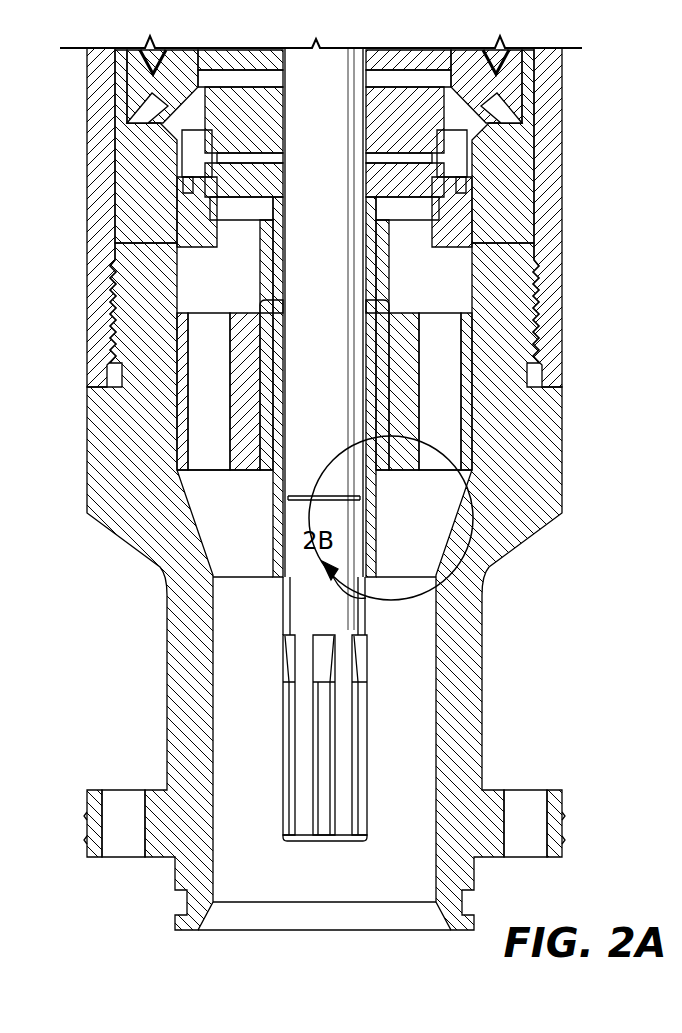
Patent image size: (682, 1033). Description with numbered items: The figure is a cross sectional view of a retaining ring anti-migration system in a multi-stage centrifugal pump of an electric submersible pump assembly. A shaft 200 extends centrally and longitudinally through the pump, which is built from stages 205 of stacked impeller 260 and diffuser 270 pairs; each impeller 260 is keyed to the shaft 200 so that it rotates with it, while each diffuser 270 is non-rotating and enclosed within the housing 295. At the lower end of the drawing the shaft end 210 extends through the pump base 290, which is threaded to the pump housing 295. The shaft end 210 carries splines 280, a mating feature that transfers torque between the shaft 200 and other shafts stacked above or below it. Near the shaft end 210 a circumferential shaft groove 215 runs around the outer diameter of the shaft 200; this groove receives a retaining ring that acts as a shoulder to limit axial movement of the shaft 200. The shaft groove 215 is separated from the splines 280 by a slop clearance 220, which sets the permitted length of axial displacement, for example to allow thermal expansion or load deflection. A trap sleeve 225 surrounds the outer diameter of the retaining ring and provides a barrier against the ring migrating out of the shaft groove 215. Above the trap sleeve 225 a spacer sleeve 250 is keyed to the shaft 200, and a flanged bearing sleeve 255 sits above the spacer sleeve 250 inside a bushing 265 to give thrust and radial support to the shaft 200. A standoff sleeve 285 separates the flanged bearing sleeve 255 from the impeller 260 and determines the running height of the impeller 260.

The shaft 200 is at (333, 333).
The stages 205 is at (402, 148).
The shaft end 210 is at (386, 662).
The shaft groove 215 is at (305, 490).
The slop clearance 220 is at (274, 612).
The trap sleeve 225 is at (378, 540).
The spacer sleeve 250 is at (282, 440).
The bearing sleeve 255 is at (277, 328).
The impeller 260 is at (440, 106).
The bushing 265 is at (264, 397).
The diffuser 270 is at (525, 86).
The splines 280 is at (307, 737).
The standoff sleeve 285 is at (290, 249).
The pump base 290 is at (458, 747).
The housing 295 is at (552, 303).